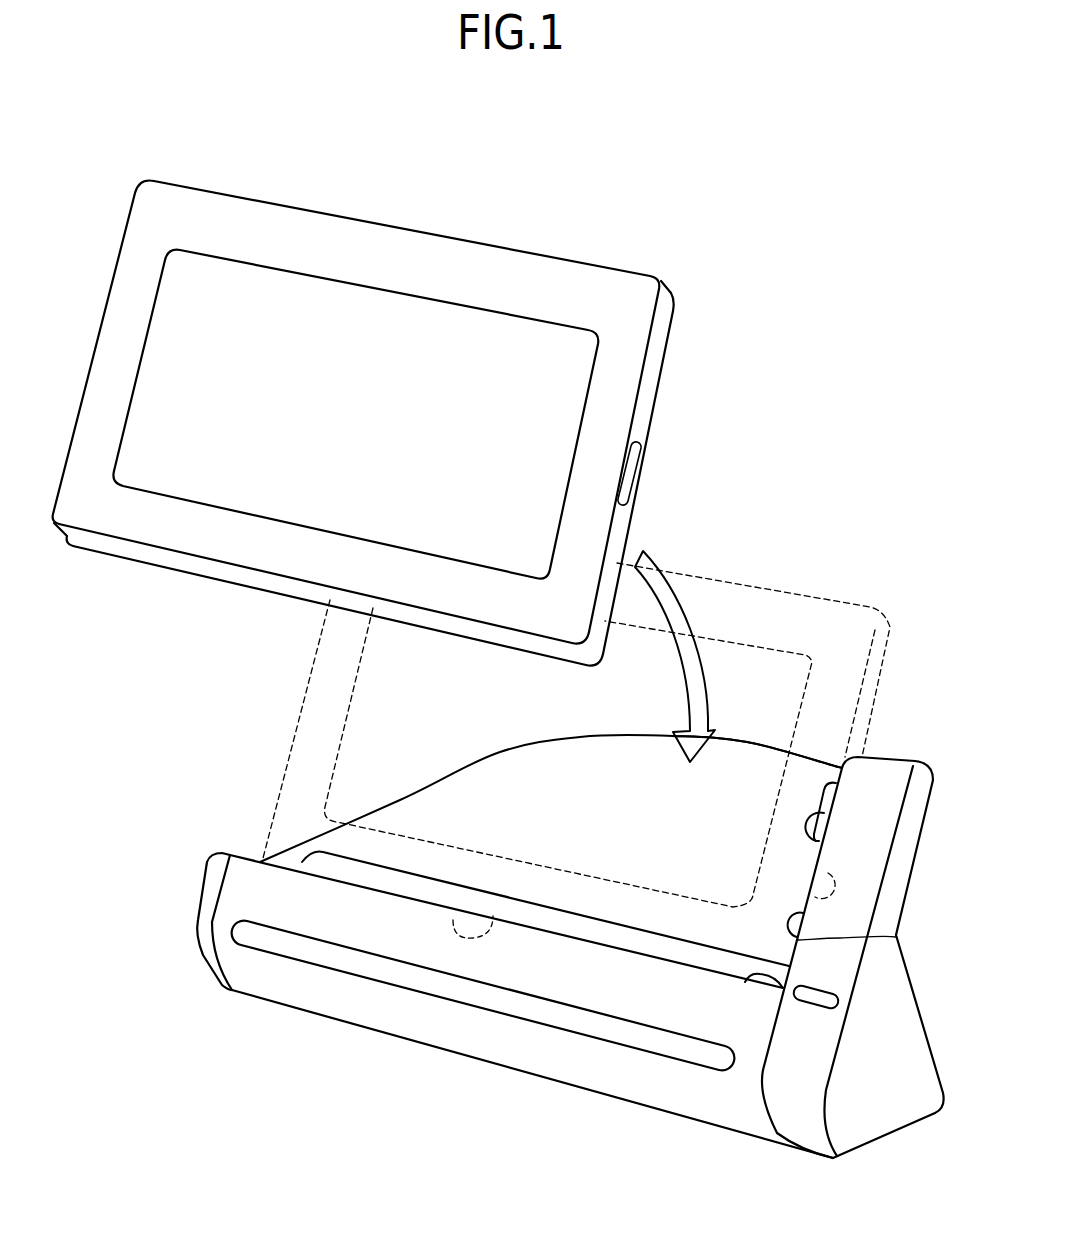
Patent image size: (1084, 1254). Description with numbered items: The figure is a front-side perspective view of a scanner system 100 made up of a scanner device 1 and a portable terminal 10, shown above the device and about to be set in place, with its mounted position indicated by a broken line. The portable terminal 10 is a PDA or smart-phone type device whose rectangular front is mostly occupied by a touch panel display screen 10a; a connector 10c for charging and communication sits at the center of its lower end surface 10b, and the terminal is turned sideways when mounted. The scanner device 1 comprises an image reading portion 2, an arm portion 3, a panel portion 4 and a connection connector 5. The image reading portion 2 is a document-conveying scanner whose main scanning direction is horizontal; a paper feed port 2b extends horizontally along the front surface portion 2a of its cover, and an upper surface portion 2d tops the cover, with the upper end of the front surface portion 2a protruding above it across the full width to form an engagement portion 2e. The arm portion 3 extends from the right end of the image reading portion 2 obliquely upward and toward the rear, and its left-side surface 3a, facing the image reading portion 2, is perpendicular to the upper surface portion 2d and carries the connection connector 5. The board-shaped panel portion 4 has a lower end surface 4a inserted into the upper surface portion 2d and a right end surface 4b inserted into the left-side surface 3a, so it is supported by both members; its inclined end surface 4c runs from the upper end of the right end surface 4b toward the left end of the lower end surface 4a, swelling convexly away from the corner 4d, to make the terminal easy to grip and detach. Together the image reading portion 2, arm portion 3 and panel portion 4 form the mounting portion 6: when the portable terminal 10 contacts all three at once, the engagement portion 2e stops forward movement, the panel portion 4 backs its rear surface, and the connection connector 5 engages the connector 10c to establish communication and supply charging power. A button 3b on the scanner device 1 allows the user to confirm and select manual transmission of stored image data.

The scanner system 100 is at (857, 129).
The portable terminal 10 is at (380, 230).
The display screen 10a is at (468, 318).
The lower end surface 10b is at (647, 408).
The connector 10c is at (629, 475).
The scanner device 1 is at (918, 550).
The image reading portion 2 is at (180, 896).
The front surface portion 2a is at (250, 977).
The paper feed port 2b is at (513, 1008).
The upper surface portion 2d is at (307, 862).
The engagement portion 2e is at (403, 907).
The arm portion 3 is at (908, 740).
The left-side surface 3a is at (896, 937).
The button 3b is at (803, 1007).
The panel portion 4 is at (524, 726).
The lower end surface 4a is at (453, 920).
The right end surface 4b is at (810, 898).
The inclined end surface 4c is at (748, 740).
The corner 4d is at (745, 982).
The connection connector 5 is at (820, 838).
The mounting portion 6 is at (522, 822).